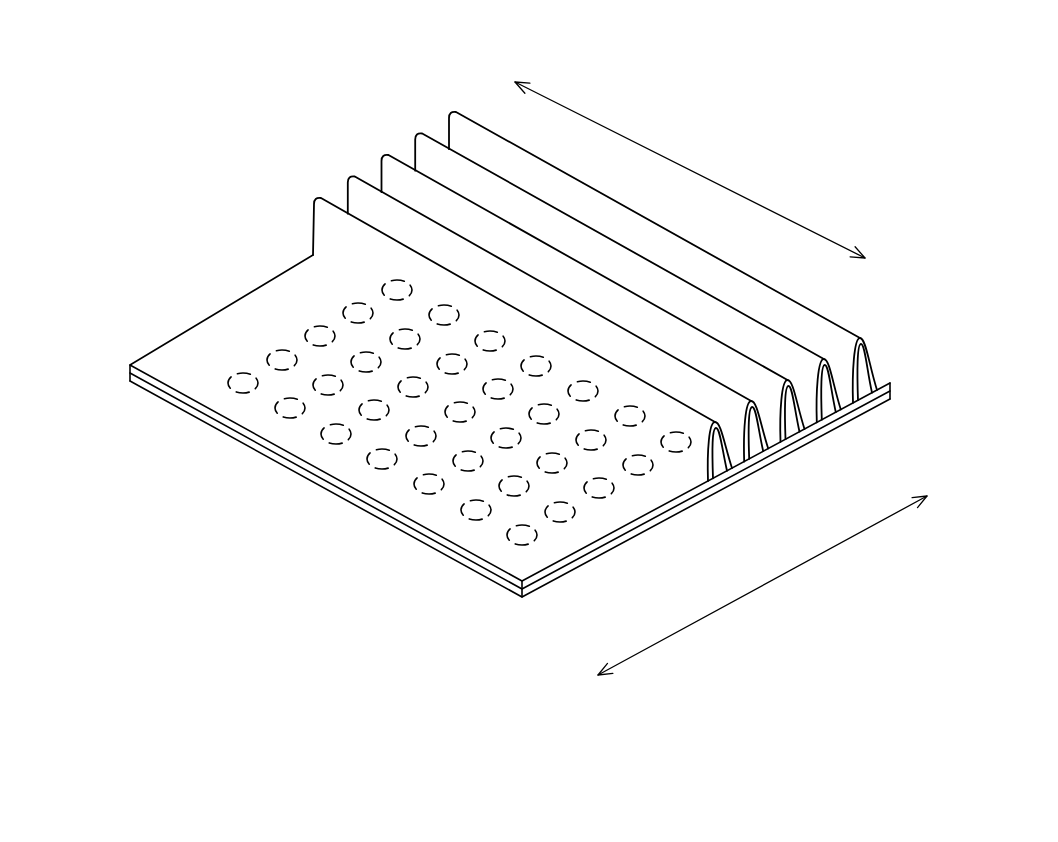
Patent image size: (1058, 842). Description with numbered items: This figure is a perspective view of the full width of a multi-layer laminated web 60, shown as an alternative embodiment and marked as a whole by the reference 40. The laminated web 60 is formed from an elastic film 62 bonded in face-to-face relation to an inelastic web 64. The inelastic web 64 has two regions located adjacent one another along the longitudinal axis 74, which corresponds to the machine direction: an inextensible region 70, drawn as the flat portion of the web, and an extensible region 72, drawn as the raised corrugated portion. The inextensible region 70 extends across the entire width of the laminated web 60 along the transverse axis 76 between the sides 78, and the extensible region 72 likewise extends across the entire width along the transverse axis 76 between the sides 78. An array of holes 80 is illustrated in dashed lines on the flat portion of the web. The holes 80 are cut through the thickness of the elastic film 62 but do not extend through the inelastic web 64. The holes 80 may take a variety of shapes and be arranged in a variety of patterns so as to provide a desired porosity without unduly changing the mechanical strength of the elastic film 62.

The heat transfer plate assembly 40 is at (505, 628).
The laminated web 60 is at (262, 584).
The elastic film 62 is at (692, 490).
The inelastic web 64 is at (180, 352).
The inextensible region 70 is at (224, 170).
The extensible region 72 is at (333, 27).
The longitudinal axis 74 is at (712, 607).
The transverse axis 76 is at (638, 140).
The sides 78 is at (452, 110).
The holes 80 is at (360, 470).